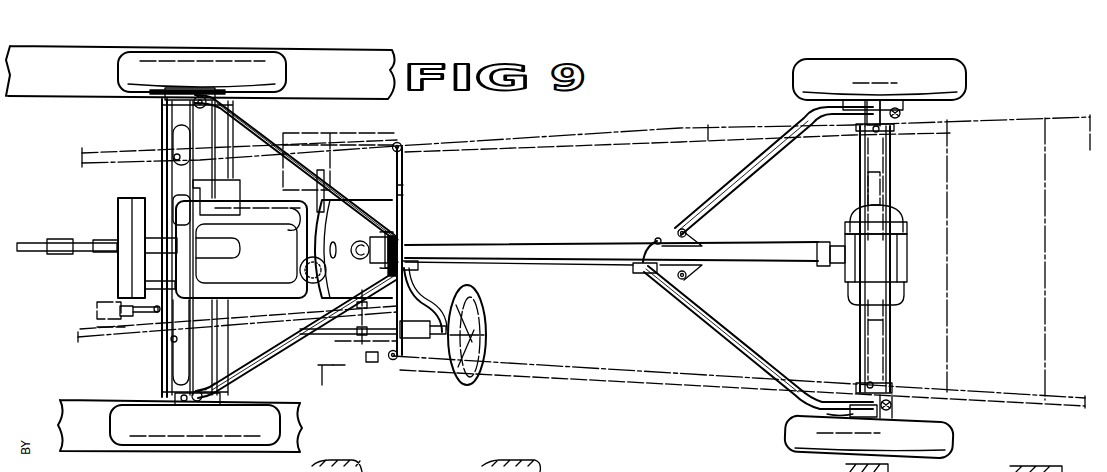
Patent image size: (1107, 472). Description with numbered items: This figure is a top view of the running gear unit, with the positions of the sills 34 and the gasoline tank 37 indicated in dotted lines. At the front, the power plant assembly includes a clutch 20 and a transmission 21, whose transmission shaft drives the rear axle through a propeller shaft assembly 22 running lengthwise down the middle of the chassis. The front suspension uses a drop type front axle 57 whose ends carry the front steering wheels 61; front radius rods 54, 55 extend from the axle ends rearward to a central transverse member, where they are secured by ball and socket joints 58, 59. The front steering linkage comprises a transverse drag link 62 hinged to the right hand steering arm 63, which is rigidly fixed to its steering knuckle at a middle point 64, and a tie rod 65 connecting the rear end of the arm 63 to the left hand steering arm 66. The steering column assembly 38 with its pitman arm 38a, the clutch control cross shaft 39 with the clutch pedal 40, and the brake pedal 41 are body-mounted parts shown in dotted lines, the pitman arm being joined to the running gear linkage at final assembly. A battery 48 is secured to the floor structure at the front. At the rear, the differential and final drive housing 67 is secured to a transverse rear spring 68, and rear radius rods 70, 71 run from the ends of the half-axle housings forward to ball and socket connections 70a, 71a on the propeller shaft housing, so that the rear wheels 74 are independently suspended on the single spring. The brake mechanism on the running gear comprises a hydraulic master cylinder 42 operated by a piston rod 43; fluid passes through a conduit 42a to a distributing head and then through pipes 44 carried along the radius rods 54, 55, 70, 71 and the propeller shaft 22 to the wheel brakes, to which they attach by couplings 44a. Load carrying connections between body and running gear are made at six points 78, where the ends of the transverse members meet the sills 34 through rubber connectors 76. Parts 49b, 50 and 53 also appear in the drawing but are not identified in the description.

The clutch 20 is at (348, 200).
The transmission 21 is at (415, 283).
The propeller shaft assembly 22 is at (580, 252).
The sills 34 is at (82, 160).
The gasoline tank 37 is at (1017, 283).
The steering column assembly 38 is at (446, 370).
The pitman arm 38a is at (100, 302).
The clutch control cross shaft 39 is at (375, 361).
The clutch pedal 40 is at (321, 375).
The brake pedal 41 is at (357, 312).
The hydraulic master cylinder 42 is at (440, 320).
The conduit 42a is at (452, 290).
The piston rod 43 is at (356, 322).
The pipes 44 is at (283, 170).
The couplings 44a is at (173, 397).
The battery 48 is at (310, 140).
The link 49b is at (404, 197).
The pivot 50 is at (396, 243).
The spring 53 is at (260, 173).
The front radius rod 54 is at (258, 372).
The front radius rod 55 is at (877, 210).
The drop type front axle 57 is at (200, 168).
The ball and socket joint 58 is at (403, 242).
The ball and socket joint 59 is at (365, 240).
The front steering wheels 61 is at (151, 62).
The drag link 62 is at (161, 122).
The right hand steering arm 63 is at (196, 90).
The point 64 is at (210, 92).
The tie rod 65 is at (248, 107).
The left hand steering arm 66 is at (210, 405).
The housing 67 is at (907, 257).
The rear spring 68 is at (885, 184).
The rear radius rod 70 is at (720, 315).
The ball and socket connection 70a is at (672, 280).
The rear radius rod 71 is at (717, 193).
The ball and socket connection 71a is at (668, 236).
The rear wheels 74 is at (913, 62).
The connectors 76 is at (405, 145).
The points 78 is at (174, 157).